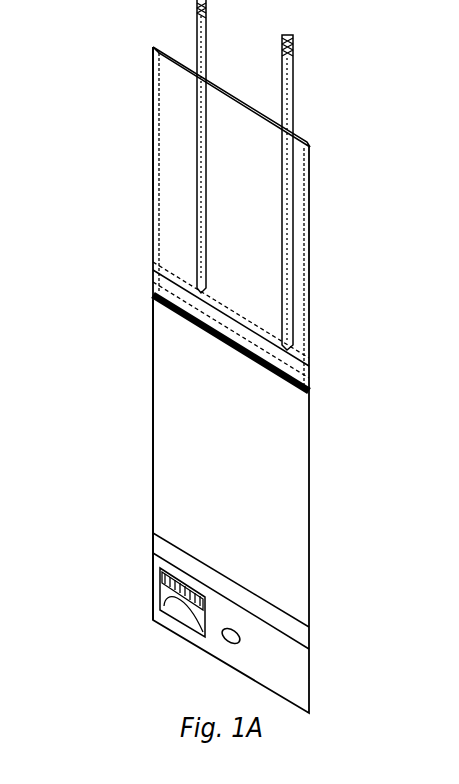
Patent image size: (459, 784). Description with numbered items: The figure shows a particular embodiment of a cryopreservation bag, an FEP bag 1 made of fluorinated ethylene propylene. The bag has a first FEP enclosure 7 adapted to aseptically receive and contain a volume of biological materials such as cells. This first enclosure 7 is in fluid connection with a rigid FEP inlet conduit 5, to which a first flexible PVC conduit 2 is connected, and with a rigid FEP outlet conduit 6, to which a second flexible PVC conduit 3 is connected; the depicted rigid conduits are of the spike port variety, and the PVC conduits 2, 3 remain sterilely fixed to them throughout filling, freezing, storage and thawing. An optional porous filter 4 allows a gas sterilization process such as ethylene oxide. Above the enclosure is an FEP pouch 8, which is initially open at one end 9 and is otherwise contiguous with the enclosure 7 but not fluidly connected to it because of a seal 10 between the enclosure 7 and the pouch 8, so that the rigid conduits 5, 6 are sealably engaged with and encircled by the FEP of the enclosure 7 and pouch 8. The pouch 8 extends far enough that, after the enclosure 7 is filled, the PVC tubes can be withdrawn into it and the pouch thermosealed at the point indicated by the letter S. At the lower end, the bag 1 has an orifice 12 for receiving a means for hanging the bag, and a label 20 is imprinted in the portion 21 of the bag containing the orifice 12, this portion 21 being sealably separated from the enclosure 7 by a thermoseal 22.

The FEP bag 1 is at (140, 475).
The thermoseal point S is at (153, 148).
The first PVC conduit 2 is at (200, 205).
The second PVC conduit 3 is at (288, 203).
The porous filter 4 is at (293, 52).
The rigid inlet conduit 5 is at (200, 305).
The rigid outlet conduit 6 is at (287, 358).
The first FEP enclosure 7 is at (180, 413).
The FEP pouch 8 is at (258, 292).
The open end 9 is at (267, 117).
The seal 10 is at (245, 318).
The orifice 12 is at (238, 633).
The label 20 is at (165, 578).
The portion 21 is at (278, 677).
The thermoseal 22 is at (250, 592).